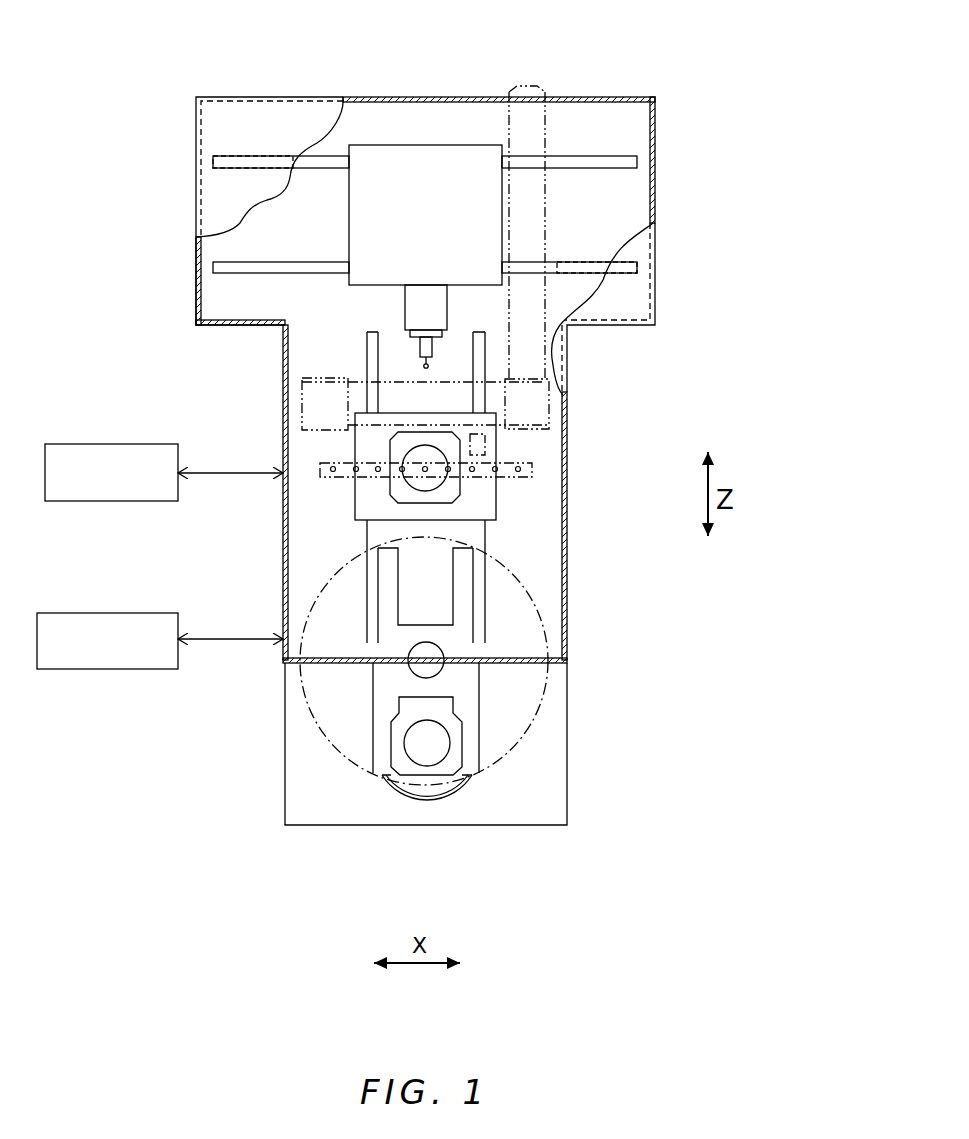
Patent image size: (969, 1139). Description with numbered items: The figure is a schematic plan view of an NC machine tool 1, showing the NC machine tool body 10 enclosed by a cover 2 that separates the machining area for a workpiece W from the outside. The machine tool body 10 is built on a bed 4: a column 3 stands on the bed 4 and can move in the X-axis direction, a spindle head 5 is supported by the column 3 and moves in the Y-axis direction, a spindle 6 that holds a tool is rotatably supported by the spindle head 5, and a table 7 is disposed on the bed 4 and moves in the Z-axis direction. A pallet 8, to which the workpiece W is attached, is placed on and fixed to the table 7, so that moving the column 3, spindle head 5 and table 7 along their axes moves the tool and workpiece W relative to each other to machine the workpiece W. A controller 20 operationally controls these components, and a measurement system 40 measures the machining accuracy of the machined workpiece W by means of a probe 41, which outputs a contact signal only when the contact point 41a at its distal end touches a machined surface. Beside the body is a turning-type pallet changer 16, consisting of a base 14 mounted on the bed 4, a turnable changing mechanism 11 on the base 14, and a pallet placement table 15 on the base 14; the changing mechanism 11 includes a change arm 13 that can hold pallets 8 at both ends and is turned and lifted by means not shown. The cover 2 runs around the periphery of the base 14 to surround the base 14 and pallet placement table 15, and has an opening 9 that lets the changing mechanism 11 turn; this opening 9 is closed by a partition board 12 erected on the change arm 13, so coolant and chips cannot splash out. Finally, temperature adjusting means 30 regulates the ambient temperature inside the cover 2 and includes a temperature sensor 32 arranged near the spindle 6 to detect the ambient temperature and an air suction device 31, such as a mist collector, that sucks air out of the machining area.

The NC machine tool 1 is at (168, 48).
The NC machine tool body 10 is at (425, 332).
The cover 2 is at (420, 99).
The column 3 is at (353, 228).
The bed 4 is at (583, 312).
The spindle head 5 is at (405, 305).
The spindle 6 is at (414, 333).
The table 7 is at (492, 495).
The pallet 8 is at (392, 487).
The opening 9 is at (300, 658).
The changing mechanism 11 is at (492, 632).
The partition board 12 is at (527, 660).
The change arm 13 is at (473, 758).
The base 14 is at (548, 778).
The pallet placement table 15 is at (418, 790).
The pallet changer 16 is at (492, 695).
The controller 20 is at (106, 501).
The temperature adjusting means 30 is at (488, 427).
The air suction device 31 is at (537, 403).
The temperature sensor 32 is at (488, 445).
The measurement system 40 is at (104, 669).
The probe 41 is at (420, 345).
The contact point 41a is at (424, 362).
The workpiece W is at (425, 487).